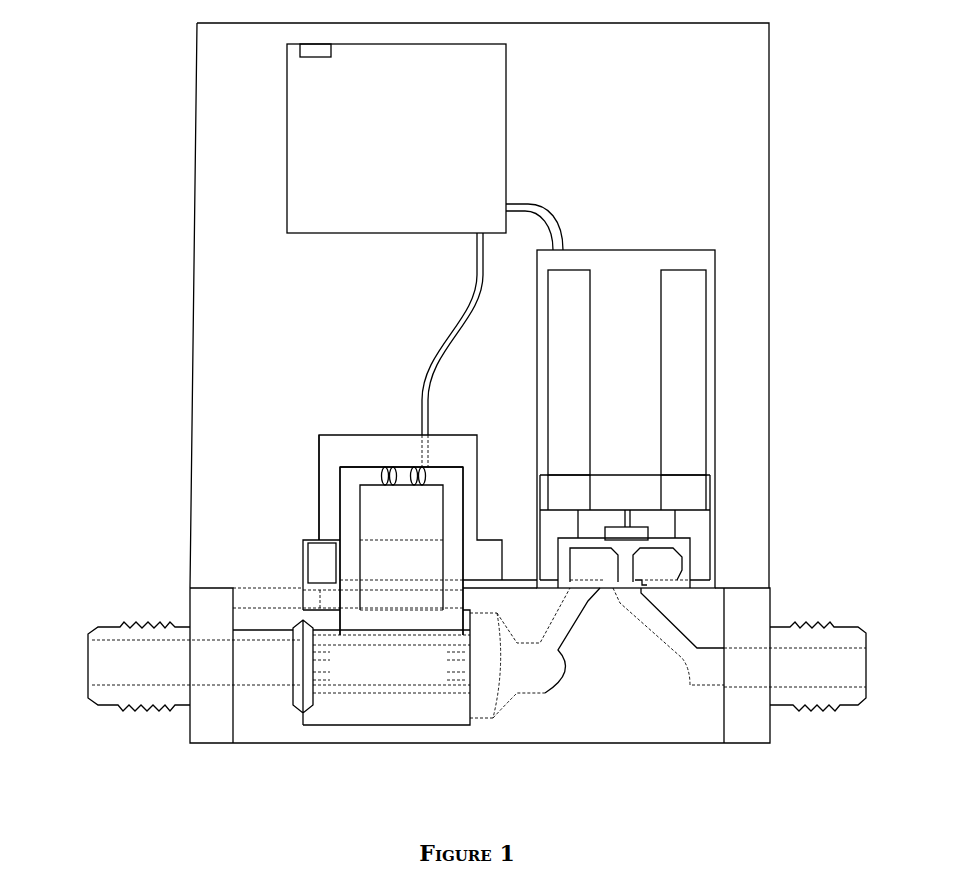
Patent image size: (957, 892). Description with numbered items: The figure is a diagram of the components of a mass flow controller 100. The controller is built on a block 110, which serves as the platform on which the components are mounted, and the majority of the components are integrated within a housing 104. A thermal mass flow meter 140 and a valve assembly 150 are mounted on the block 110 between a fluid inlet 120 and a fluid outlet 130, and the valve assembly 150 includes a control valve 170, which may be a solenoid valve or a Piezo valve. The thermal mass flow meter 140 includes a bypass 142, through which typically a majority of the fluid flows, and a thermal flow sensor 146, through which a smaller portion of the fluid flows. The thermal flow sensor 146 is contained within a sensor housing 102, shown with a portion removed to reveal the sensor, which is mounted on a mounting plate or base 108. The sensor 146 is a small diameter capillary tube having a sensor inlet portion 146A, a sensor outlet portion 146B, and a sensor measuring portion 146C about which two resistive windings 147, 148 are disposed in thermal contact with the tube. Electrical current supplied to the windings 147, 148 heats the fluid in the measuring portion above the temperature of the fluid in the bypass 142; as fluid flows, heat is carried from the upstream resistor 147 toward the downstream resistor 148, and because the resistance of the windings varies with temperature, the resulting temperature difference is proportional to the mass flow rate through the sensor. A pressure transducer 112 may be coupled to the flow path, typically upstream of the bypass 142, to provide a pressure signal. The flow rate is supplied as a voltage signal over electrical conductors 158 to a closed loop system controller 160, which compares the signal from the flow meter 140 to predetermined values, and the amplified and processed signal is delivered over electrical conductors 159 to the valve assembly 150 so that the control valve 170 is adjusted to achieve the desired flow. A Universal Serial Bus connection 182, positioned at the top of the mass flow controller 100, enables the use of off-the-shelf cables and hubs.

The mass flow controller 100 is at (102, 163).
The sensor housing 102 is at (319, 450).
The housing 104 is at (197, 75).
The mounting plate or base 108 is at (303, 582).
The block 110 is at (672, 713).
The pressure transducer 112 is at (305, 557).
The fluid inlet 120 is at (105, 663).
The fluid outlet 130 is at (855, 660).
The thermal mass flow meter 140 is at (319, 435).
The bypass 142 is at (378, 693).
The thermal flow sensor 146 is at (443, 462).
The sensor inlet portion 146A is at (340, 512).
The sensor outlet portion 146B is at (465, 507).
The sensor measuring portion 146C is at (398, 478).
The upstream resistive winding 147 is at (387, 480).
The downstream resistive winding 148 is at (415, 470).
The valve assembly 150 is at (692, 393).
The electrical conductors 158 is at (472, 312).
The electrical conductors 159 is at (547, 210).
The closed loop system controller 160 is at (381, 146).
The control valve 170 is at (650, 532).
The Universal Serial Bus (USB) connection 182 is at (300, 49).